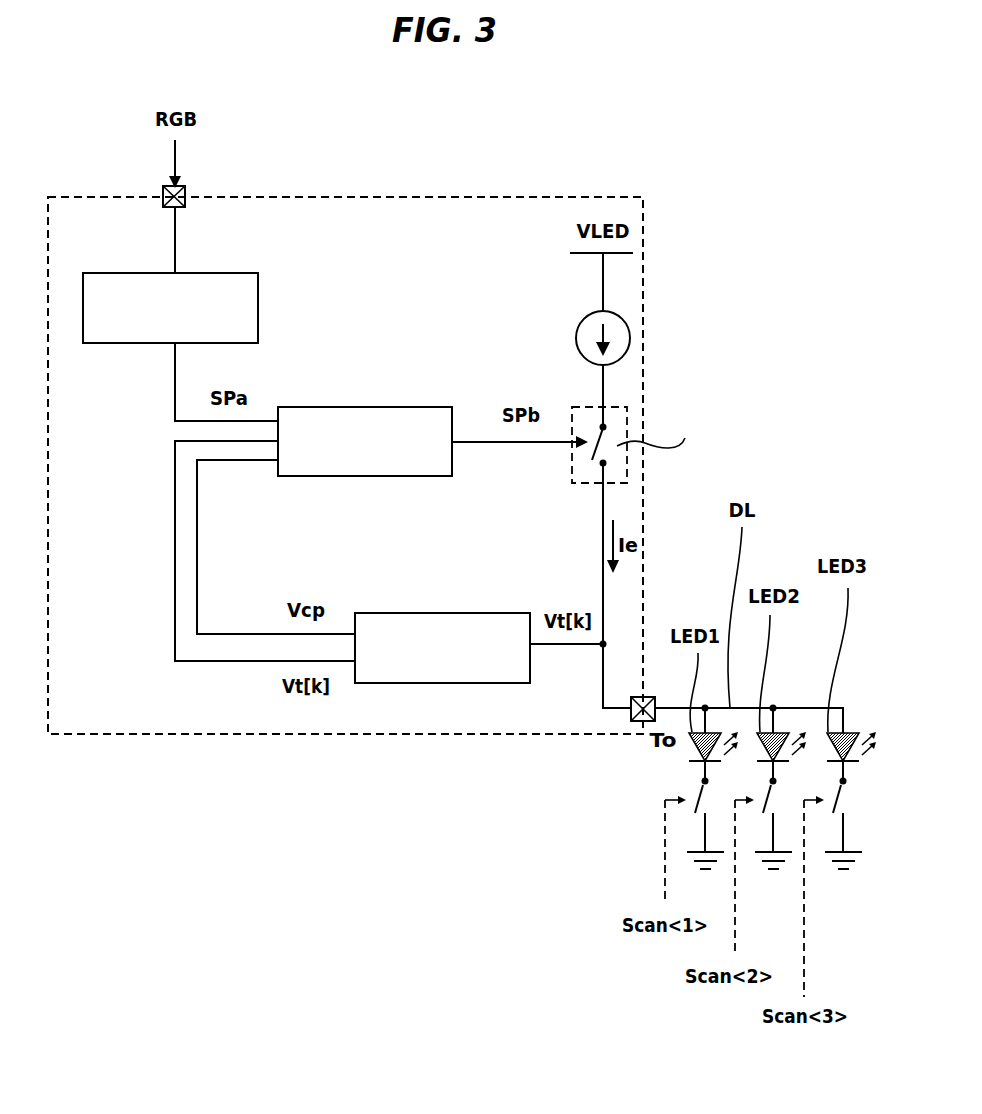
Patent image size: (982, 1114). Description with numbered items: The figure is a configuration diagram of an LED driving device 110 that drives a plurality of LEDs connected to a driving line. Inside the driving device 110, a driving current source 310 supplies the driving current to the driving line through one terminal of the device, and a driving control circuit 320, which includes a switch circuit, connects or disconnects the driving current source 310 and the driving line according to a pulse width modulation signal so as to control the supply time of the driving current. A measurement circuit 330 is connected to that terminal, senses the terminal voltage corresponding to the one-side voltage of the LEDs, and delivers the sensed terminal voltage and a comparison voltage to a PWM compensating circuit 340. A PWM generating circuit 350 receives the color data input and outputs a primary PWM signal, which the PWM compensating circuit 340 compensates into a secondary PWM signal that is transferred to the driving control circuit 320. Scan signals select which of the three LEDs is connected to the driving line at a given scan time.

The LED driving device 110 is at (733, 150).
The driving current source 310 is at (630, 323).
The driving control circuit 320 is at (630, 402).
The measurement circuit 330 is at (455, 683).
The PWM compensating circuit 340 is at (430, 407).
The PWM generating circuit 350 is at (240, 273).